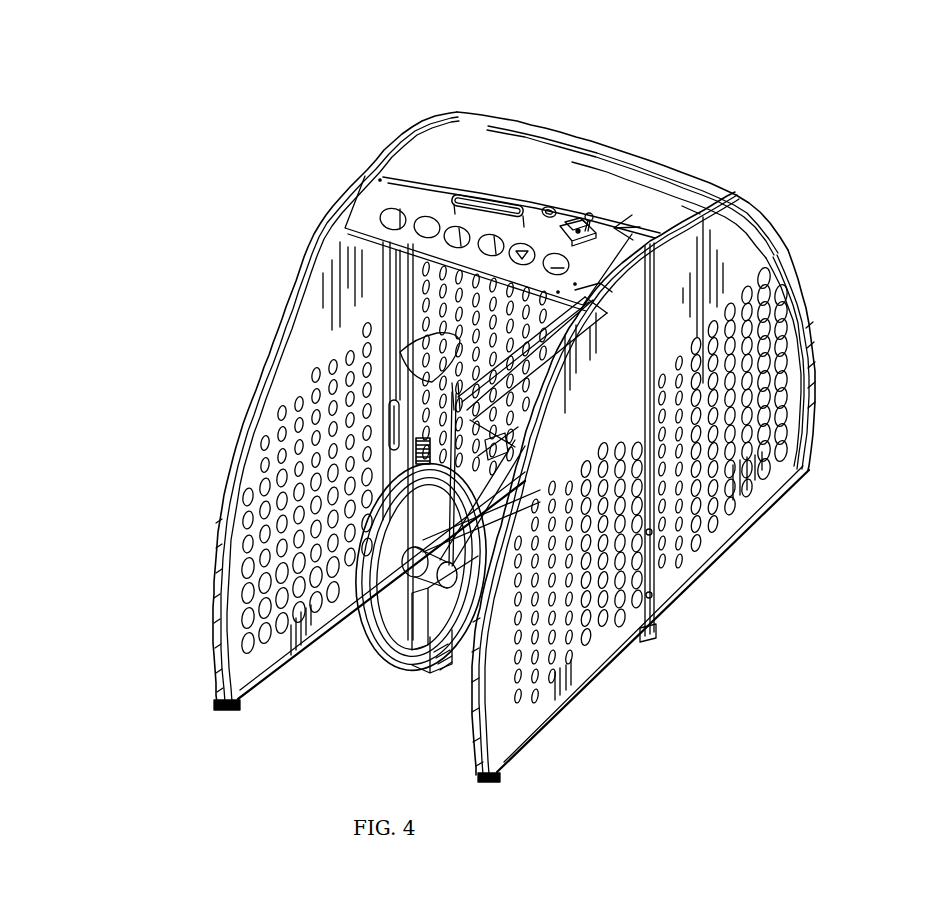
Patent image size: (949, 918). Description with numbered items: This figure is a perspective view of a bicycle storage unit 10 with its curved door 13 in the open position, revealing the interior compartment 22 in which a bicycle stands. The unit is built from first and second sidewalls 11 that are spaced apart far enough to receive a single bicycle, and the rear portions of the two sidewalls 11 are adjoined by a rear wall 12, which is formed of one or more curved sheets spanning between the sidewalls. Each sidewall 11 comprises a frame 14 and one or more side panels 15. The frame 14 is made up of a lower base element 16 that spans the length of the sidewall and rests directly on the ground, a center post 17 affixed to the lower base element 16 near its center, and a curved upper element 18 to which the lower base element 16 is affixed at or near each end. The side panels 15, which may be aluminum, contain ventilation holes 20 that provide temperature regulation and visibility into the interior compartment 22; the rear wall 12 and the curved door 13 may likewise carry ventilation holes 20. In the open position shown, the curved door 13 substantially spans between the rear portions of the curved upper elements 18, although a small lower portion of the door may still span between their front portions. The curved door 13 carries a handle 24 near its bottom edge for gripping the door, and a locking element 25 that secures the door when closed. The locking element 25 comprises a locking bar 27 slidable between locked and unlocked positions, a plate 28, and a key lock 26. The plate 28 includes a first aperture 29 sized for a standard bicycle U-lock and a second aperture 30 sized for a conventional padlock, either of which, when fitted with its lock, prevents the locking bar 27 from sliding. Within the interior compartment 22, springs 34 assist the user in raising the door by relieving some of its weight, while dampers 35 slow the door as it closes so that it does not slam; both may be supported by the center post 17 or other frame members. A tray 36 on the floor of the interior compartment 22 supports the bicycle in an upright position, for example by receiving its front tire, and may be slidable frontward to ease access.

The bicycle storage unit 10 is at (308, 153).
The sidewall 11 is at (250, 540).
The rear wall 12 is at (455, 135).
The curved door 13 is at (420, 200).
The frame 14 is at (526, 781).
The side panel 15 is at (730, 282).
The lower base element 16 is at (642, 630).
The center post 17 is at (648, 497).
The curved upper element 18 is at (808, 302).
The ventilation holes 20 is at (787, 397).
The interior compartment 22 is at (282, 741).
The handle 24 is at (497, 205).
The locking element 25 is at (690, 208).
The key lock 26 is at (549, 206).
The locking bar 27 is at (598, 224).
The plate 28 is at (586, 226).
The aperture 29 is at (615, 228).
The aperture 30 is at (570, 223).
The spring 34 is at (418, 452).
The damper 35 is at (390, 431).
The tray 36 is at (448, 655).